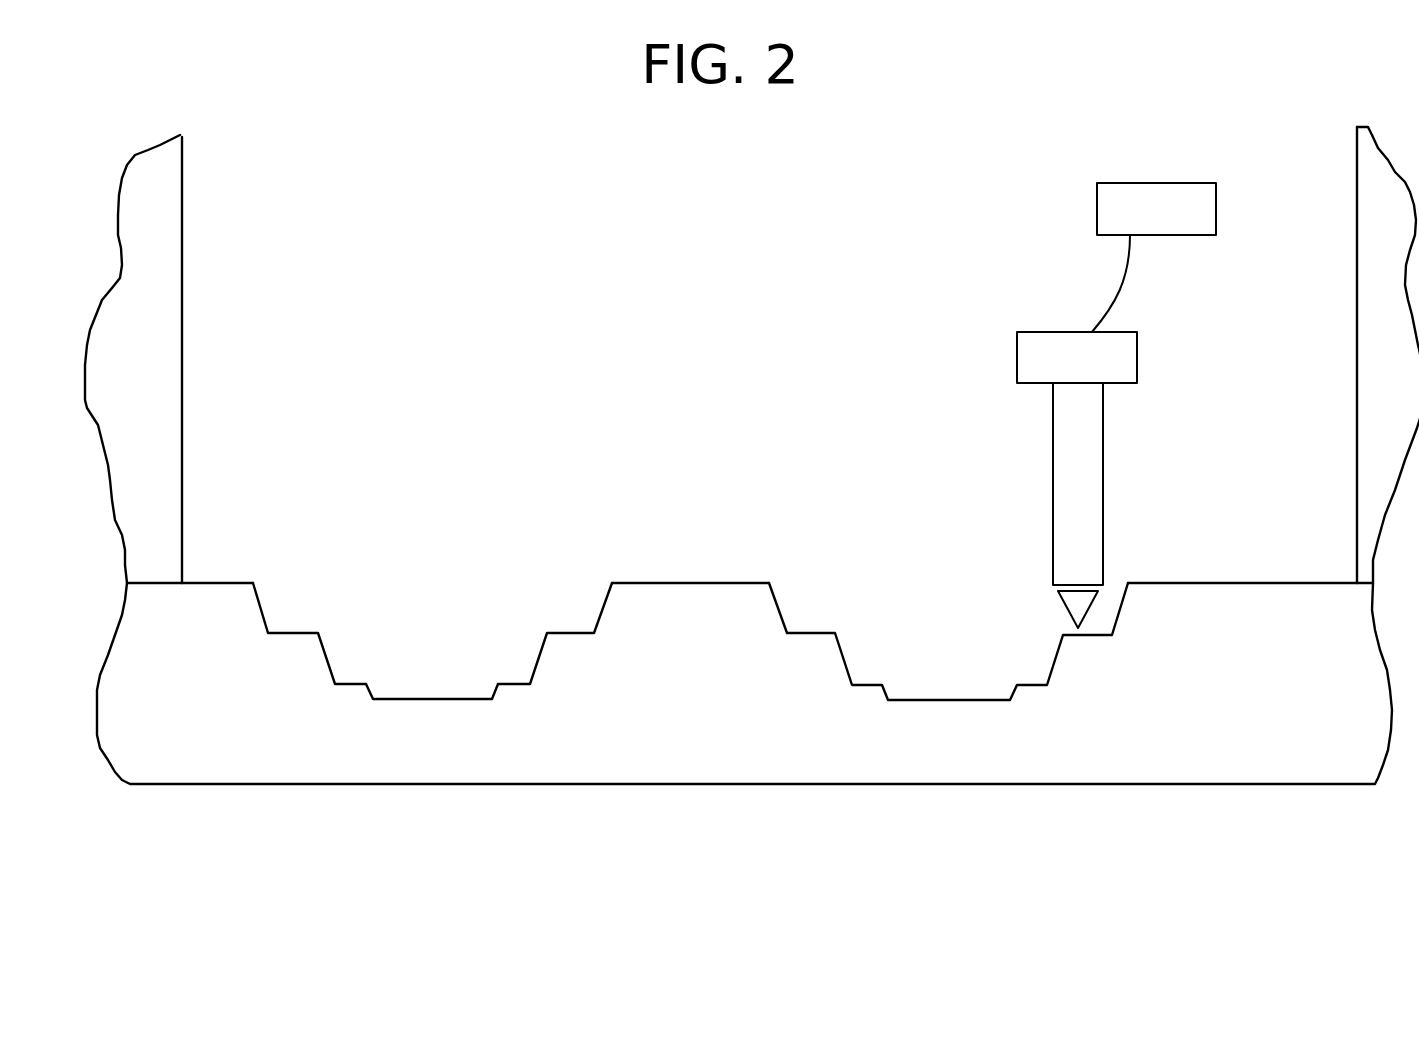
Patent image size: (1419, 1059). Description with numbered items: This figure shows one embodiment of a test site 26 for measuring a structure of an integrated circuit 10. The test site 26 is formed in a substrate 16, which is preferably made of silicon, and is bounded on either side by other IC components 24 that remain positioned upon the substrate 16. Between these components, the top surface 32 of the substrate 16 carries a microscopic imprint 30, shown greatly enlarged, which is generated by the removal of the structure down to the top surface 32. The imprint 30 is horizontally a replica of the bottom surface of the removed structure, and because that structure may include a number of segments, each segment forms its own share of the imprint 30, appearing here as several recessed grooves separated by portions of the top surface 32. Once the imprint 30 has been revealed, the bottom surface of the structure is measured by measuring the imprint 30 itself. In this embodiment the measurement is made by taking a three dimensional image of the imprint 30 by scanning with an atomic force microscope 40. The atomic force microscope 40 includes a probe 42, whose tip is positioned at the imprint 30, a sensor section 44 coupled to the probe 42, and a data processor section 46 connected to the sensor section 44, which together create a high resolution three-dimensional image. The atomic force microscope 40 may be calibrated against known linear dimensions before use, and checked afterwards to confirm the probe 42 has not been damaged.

The integrated circuit 10 is at (752, 509).
The substrate 16 is at (750, 608).
The other IC components 24 is at (162, 282).
The test site 26 is at (726, 377).
The imprint 30 is at (379, 586).
The top surface 32 is at (208, 588).
The atomic force microscope 40 is at (1096, 405).
The probe 42 is at (1082, 607).
The sensor section 44 is at (1060, 371).
The data processor section 46 is at (1140, 225).